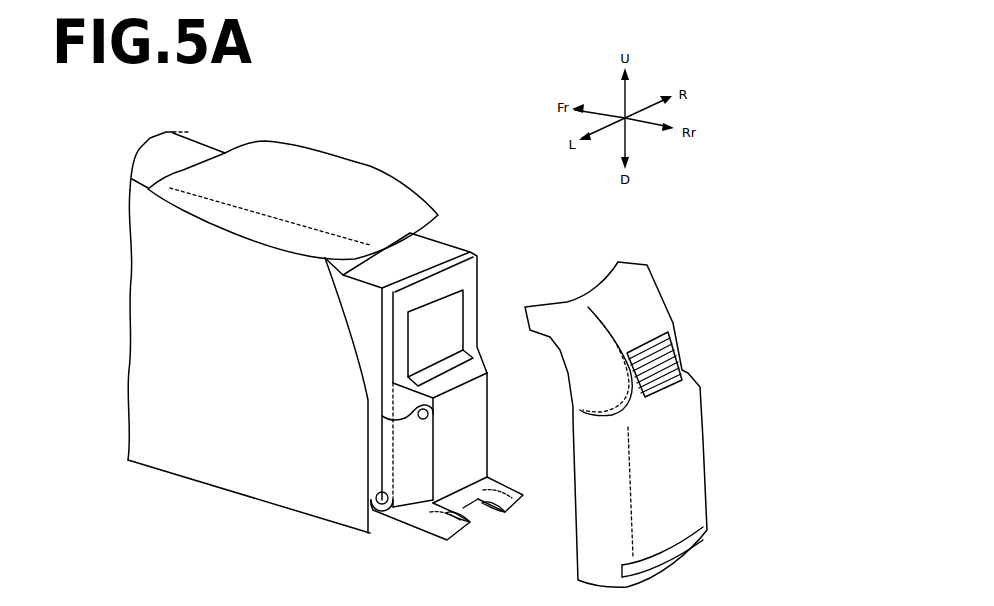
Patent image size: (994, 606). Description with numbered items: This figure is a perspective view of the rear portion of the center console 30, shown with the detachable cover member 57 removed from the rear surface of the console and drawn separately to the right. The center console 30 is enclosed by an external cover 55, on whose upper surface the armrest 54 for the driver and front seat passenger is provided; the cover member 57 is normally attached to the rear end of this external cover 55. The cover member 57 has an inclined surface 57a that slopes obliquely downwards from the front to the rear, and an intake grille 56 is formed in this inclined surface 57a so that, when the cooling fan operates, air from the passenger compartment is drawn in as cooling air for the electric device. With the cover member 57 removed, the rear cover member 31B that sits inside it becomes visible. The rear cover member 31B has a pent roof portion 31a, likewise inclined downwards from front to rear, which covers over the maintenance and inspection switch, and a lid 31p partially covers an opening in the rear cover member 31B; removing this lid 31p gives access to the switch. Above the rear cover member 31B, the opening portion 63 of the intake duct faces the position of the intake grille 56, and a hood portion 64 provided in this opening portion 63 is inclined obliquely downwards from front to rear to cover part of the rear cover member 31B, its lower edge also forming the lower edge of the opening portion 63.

The center console 30 is at (458, 141).
The armrest 54 is at (323, 175).
The external cover 55 is at (228, 455).
The pent roof portion 31a is at (468, 368).
The rear cover member 31B is at (463, 420).
The lid 31p is at (402, 457).
The opening portion 63 is at (425, 332).
The hood portion 64 is at (425, 372).
The intake grille 56 is at (682, 355).
The cover member 57 is at (673, 453).
The inclined surface 57a is at (643, 308).